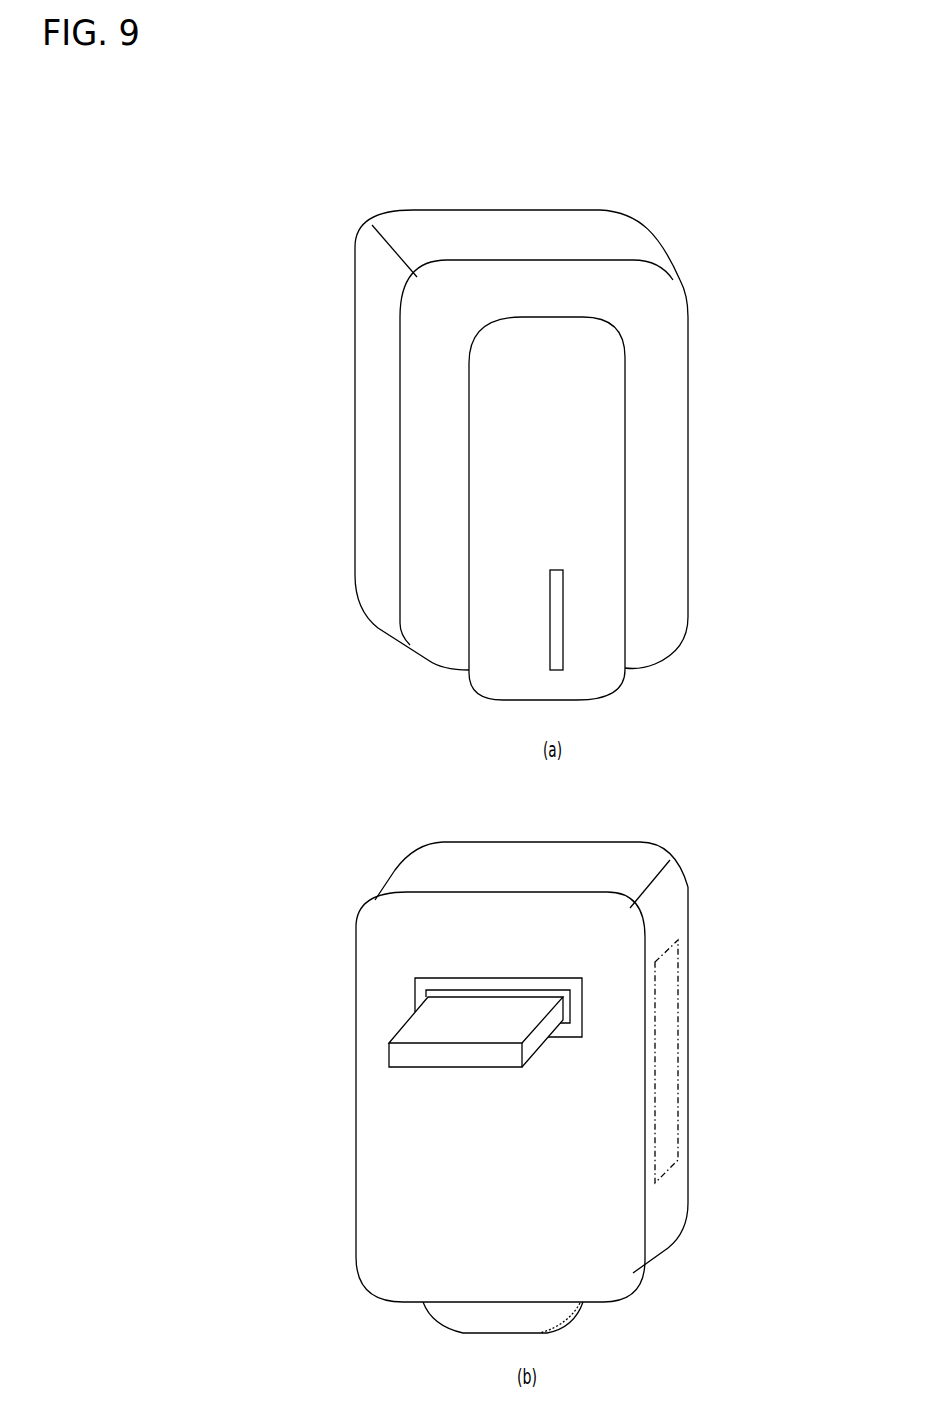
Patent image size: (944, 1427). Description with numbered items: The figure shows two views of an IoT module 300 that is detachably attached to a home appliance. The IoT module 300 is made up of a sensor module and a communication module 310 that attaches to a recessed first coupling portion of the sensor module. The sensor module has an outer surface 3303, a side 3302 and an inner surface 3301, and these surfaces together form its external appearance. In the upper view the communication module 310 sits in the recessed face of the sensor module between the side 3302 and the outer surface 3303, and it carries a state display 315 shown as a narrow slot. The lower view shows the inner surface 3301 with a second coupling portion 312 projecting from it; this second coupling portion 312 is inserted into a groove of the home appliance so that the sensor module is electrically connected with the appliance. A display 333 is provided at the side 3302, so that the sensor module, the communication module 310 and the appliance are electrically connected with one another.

The IoT module 300 is at (688, 216).
The communication module 310 is at (608, 550).
The second coupling portion 312 is at (423, 1030).
The state display 315 is at (557, 620).
The display 333 is at (667, 1017).
The inner surface 3301 is at (395, 1208).
The side 3302 is at (367, 447).
The outer surface 3303 is at (663, 418).